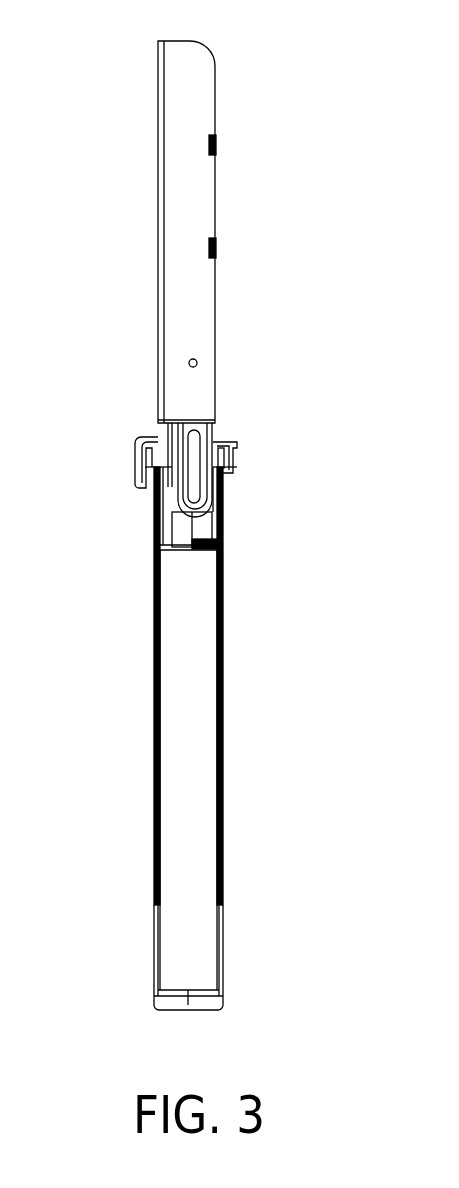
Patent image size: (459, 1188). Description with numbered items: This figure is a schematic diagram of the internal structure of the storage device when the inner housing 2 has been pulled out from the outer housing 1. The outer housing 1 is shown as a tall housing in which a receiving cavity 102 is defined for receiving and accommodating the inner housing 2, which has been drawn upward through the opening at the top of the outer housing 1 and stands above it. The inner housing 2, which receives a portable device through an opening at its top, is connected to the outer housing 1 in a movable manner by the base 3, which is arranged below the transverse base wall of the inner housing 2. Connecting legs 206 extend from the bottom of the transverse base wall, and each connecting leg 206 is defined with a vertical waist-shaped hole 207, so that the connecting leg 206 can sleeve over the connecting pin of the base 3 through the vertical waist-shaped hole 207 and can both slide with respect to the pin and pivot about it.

The outer housing 1 is at (223, 843).
The receiving cavity 102 is at (185, 702).
The inner housing 2 is at (153, 175).
The connecting leg 206 is at (204, 442).
The vertical waist-shaped hole 207 is at (190, 490).
The base 3 is at (222, 540).